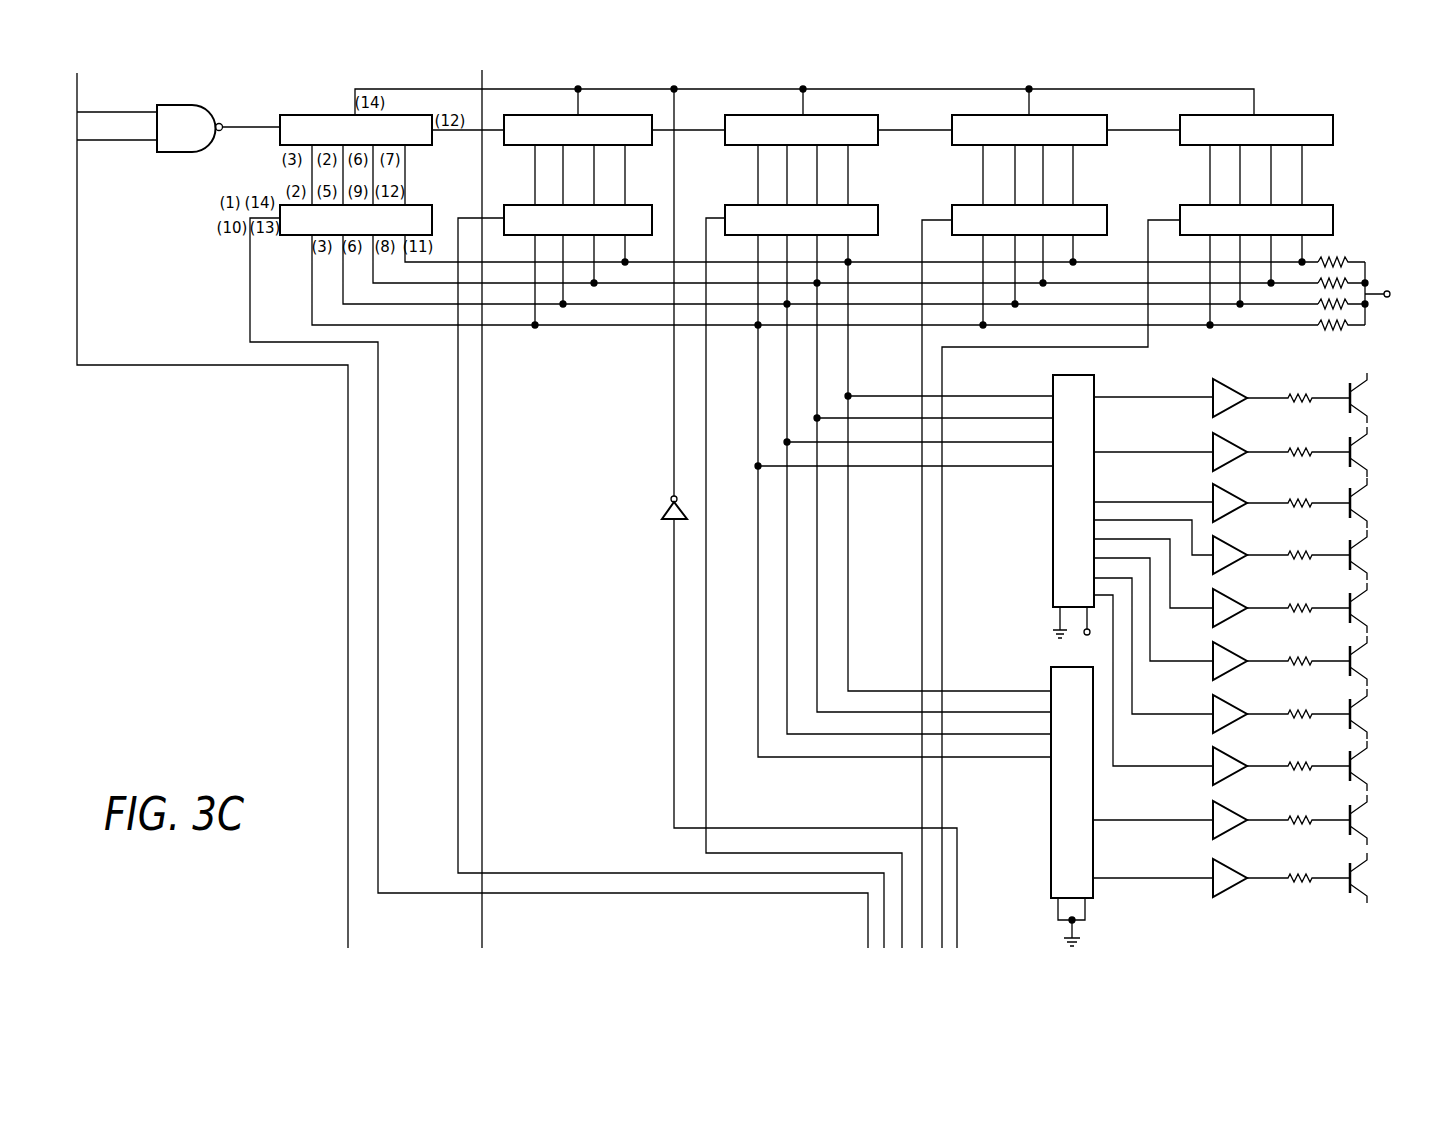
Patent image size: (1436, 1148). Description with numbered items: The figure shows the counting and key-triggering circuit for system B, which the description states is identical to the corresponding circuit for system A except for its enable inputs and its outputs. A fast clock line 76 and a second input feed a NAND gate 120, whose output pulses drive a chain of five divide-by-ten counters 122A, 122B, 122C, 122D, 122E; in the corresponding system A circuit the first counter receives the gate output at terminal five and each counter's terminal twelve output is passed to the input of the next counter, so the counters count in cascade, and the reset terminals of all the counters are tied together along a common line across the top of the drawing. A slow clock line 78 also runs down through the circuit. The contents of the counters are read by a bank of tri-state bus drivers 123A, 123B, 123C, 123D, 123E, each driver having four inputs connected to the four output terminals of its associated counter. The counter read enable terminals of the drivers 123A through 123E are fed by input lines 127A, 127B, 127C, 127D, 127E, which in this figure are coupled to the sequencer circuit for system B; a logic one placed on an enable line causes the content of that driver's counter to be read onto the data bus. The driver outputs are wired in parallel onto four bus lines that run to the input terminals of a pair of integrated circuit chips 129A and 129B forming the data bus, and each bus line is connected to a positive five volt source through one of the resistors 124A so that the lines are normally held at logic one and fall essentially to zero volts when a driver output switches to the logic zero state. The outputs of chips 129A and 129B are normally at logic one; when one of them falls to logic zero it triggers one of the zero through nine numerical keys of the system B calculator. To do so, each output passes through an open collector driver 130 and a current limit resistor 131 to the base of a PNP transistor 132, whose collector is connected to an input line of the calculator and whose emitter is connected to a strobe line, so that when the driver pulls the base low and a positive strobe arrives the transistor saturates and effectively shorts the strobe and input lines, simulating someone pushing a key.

The fast clock line 76 is at (77, 95).
The slow clock line 78 is at (482, 420).
The NAND gate 120 is at (195, 104).
The 5/10 counter 122A is at (388, 115).
The 5/10 counter 122B is at (600, 115).
The 5/10 counter 122C is at (840, 115).
The 5/10 counter 122D is at (1070, 115).
The 5/10 counter 122E is at (1305, 115).
The tri-state bus driver 123A is at (424, 205).
The tri-state bus driver 123B is at (638, 205).
The tri-state bus driver 123C is at (862, 205).
The tri-state bus driver 123D is at (1082, 205).
The tri-state bus driver 123E is at (1315, 205).
The pull-up resistors 124A is at (1318, 262).
The input line 127A is at (379, 760).
The input line 127B is at (590, 873).
The input line 127C is at (770, 853).
The input line 127D is at (920, 806).
The input line 127E is at (940, 812).
The integrated circuit chip 129A is at (1094, 378).
The integrated circuit chip 129B is at (1051, 785).
The amplifier 130 is at (1229, 386).
The resistor 131 is at (1299, 393).
The transistor 132 is at (1368, 398).